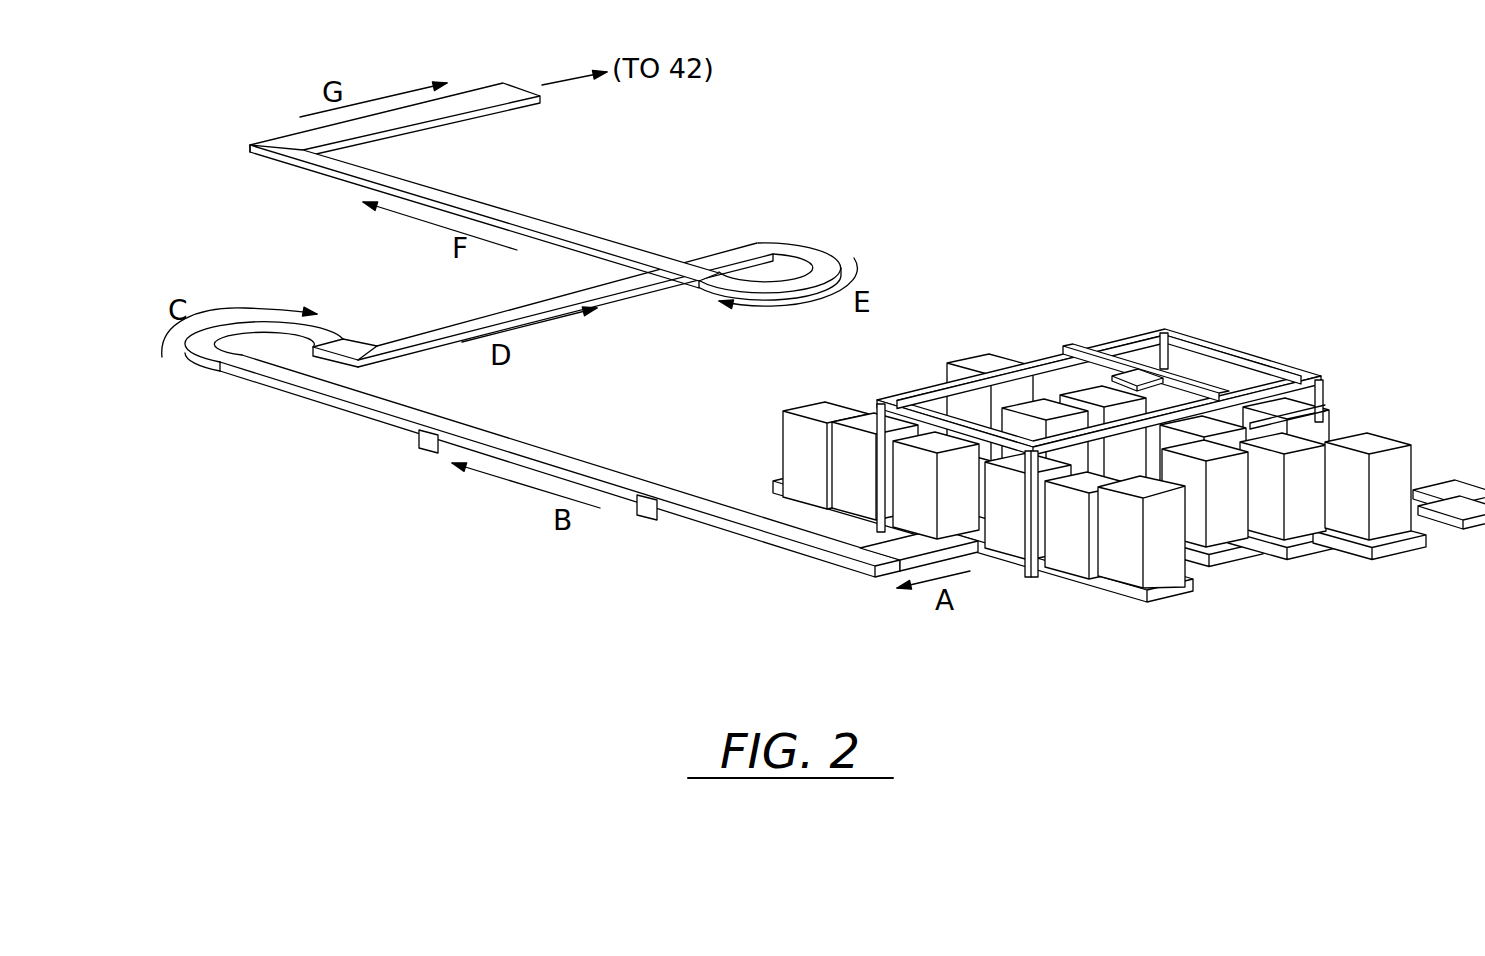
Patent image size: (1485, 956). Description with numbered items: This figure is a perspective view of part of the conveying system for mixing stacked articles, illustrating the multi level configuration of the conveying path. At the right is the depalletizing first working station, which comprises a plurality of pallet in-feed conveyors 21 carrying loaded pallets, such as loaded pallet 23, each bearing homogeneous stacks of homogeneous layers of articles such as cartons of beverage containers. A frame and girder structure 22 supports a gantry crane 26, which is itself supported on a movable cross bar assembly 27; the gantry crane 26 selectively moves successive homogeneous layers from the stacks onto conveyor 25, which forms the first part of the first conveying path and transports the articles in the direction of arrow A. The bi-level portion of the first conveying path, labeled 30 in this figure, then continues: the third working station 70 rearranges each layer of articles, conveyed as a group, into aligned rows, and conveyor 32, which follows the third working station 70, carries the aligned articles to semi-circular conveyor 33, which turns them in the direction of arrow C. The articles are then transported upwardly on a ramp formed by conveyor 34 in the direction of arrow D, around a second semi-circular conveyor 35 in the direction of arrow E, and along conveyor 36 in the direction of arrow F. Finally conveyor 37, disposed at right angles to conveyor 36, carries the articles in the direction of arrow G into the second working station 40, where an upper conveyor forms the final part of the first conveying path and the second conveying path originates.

The pallet in-feed conveyors 21 is at (983, 536).
The frame and girder structure 22 is at (1235, 353).
The loaded pallet 23 is at (1283, 412).
The conveyor 25 is at (960, 540).
The gantry crane 26 is at (1063, 356).
The movable cross bar assembly 27 is at (1135, 332).
The conveyor system 30 is at (542, 330).
The conveyor 32 is at (398, 417).
The semi-circular conveyor 33 is at (320, 336).
The ramp conveyor 34 is at (460, 325).
The second semi-circular conveyor 35 is at (720, 281).
The conveyor 36 is at (540, 225).
The conveyor 37 is at (433, 113).
The second working station 40 is at (1129, 460).
The third working station 70 is at (520, 443).